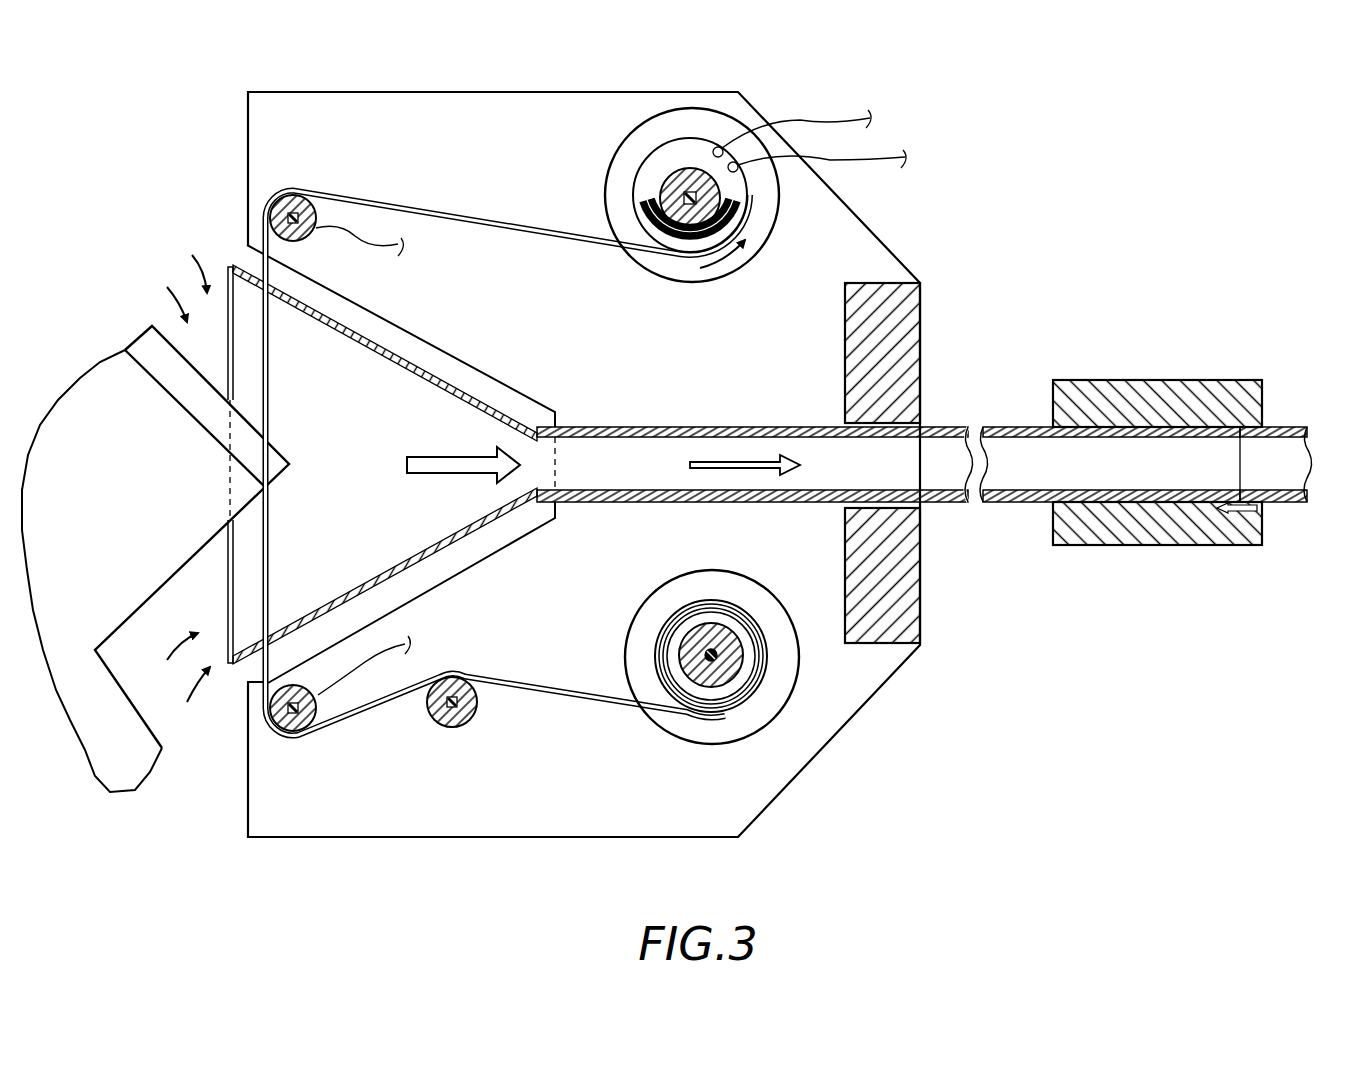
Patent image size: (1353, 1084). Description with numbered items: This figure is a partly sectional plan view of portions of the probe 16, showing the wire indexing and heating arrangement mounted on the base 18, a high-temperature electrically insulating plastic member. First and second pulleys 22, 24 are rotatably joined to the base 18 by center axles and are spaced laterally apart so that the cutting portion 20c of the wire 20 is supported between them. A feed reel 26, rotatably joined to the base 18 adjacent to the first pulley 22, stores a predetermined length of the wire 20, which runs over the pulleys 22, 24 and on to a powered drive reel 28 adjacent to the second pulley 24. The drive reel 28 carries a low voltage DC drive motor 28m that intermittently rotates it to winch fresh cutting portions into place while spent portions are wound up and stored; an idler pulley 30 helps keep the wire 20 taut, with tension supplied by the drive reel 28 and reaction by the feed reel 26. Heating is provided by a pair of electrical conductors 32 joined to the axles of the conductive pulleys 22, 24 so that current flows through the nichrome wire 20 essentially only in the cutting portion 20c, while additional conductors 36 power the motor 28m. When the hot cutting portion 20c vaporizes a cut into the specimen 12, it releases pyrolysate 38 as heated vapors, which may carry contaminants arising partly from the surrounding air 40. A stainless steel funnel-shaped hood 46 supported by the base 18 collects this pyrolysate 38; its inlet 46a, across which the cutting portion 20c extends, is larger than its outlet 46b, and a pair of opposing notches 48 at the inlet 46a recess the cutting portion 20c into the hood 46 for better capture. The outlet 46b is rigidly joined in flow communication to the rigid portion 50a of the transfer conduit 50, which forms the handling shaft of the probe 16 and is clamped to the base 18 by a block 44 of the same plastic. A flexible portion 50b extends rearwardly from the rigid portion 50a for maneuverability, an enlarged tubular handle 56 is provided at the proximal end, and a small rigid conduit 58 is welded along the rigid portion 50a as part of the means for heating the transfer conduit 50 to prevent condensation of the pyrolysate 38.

The specimen 12 is at (125, 352).
The probe 16 is at (947, 343).
The base 18 is at (860, 706).
The wire 20 is at (440, 210).
The cutting portion 20c is at (269, 396).
The first pulley 22 is at (322, 700).
The second pulley 24 is at (310, 236).
The feed reel 26 is at (668, 730).
The drive reel 28 is at (607, 194).
The drive motor 28m is at (655, 150).
The idler pulley 30 is at (467, 724).
The electrical conductors 32 is at (378, 239).
The additional conductors 36 is at (815, 120).
The pyrolysate 38 is at (437, 455).
The surrounding air 40 is at (178, 478).
The block 44 is at (843, 590).
The hood 46 is at (414, 358).
The inlet 46a is at (228, 612).
The outlet 46b is at (535, 486).
The notches 48 is at (233, 265).
The transfer conduit 50 is at (925, 417).
The rigid portion 50a is at (942, 427).
The flexible portion 50b is at (1288, 428).
The tubular handle 56 is at (1168, 380).
The rigid conduit 58 is at (953, 505).